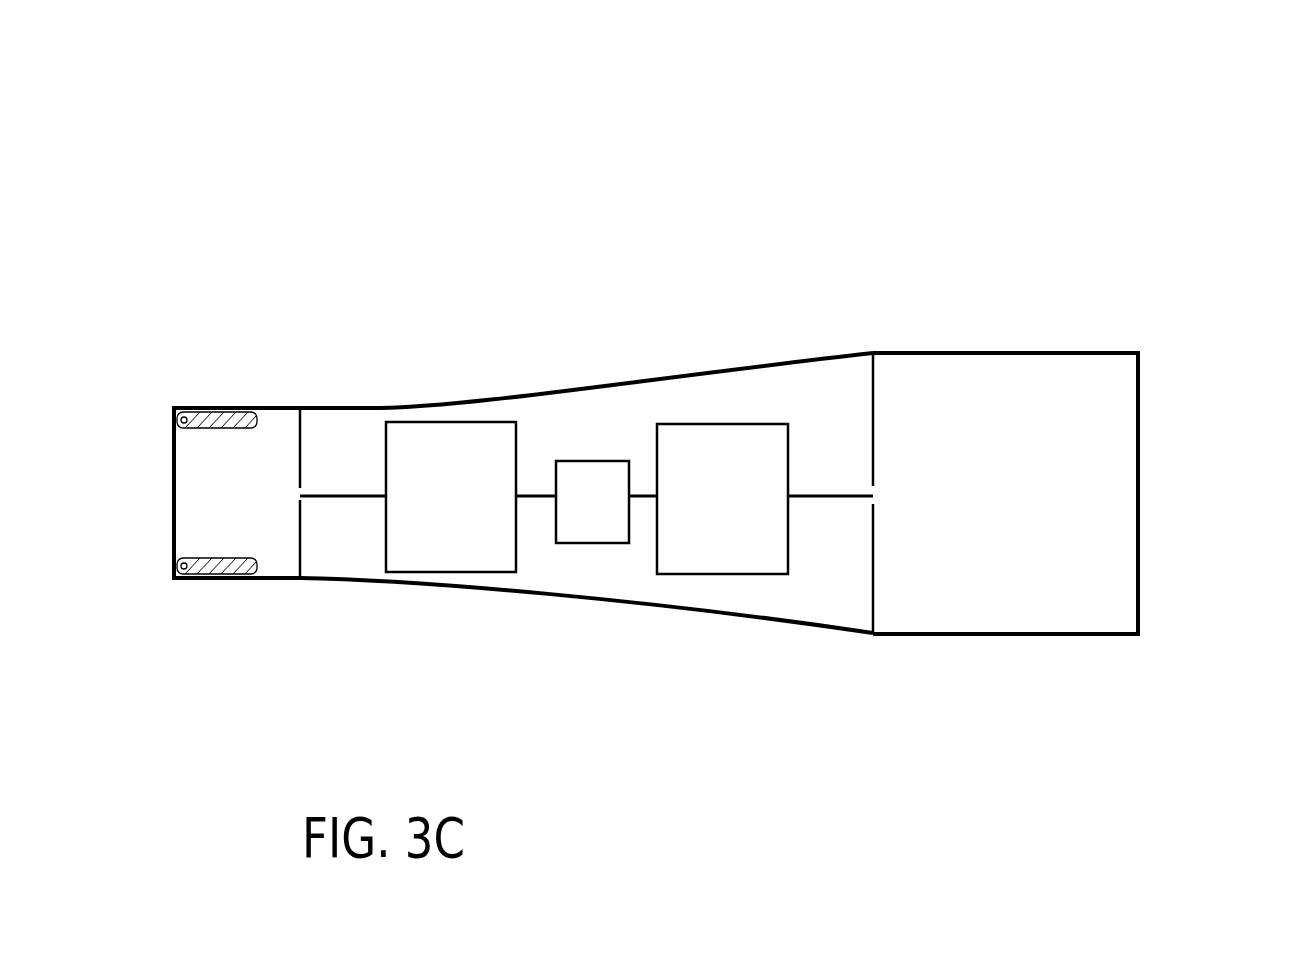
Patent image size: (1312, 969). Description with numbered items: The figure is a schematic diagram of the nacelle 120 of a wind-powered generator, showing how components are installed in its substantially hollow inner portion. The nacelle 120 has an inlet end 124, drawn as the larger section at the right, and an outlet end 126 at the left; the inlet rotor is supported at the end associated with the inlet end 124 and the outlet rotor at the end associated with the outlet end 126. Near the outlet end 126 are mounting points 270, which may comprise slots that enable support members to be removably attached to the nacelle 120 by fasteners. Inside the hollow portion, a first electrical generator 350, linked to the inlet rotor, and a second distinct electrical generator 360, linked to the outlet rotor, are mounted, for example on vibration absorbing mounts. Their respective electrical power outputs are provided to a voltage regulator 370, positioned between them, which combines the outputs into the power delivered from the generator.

The nacelle 120 is at (879, 195).
The inlet end 124 is at (1138, 600).
The outlet end 126 is at (177, 448).
The mounting point 270 is at (236, 428).
The first electrical generator 350 is at (737, 547).
The second electrical generator 360 is at (432, 528).
The voltage regulator 370 is at (584, 527).